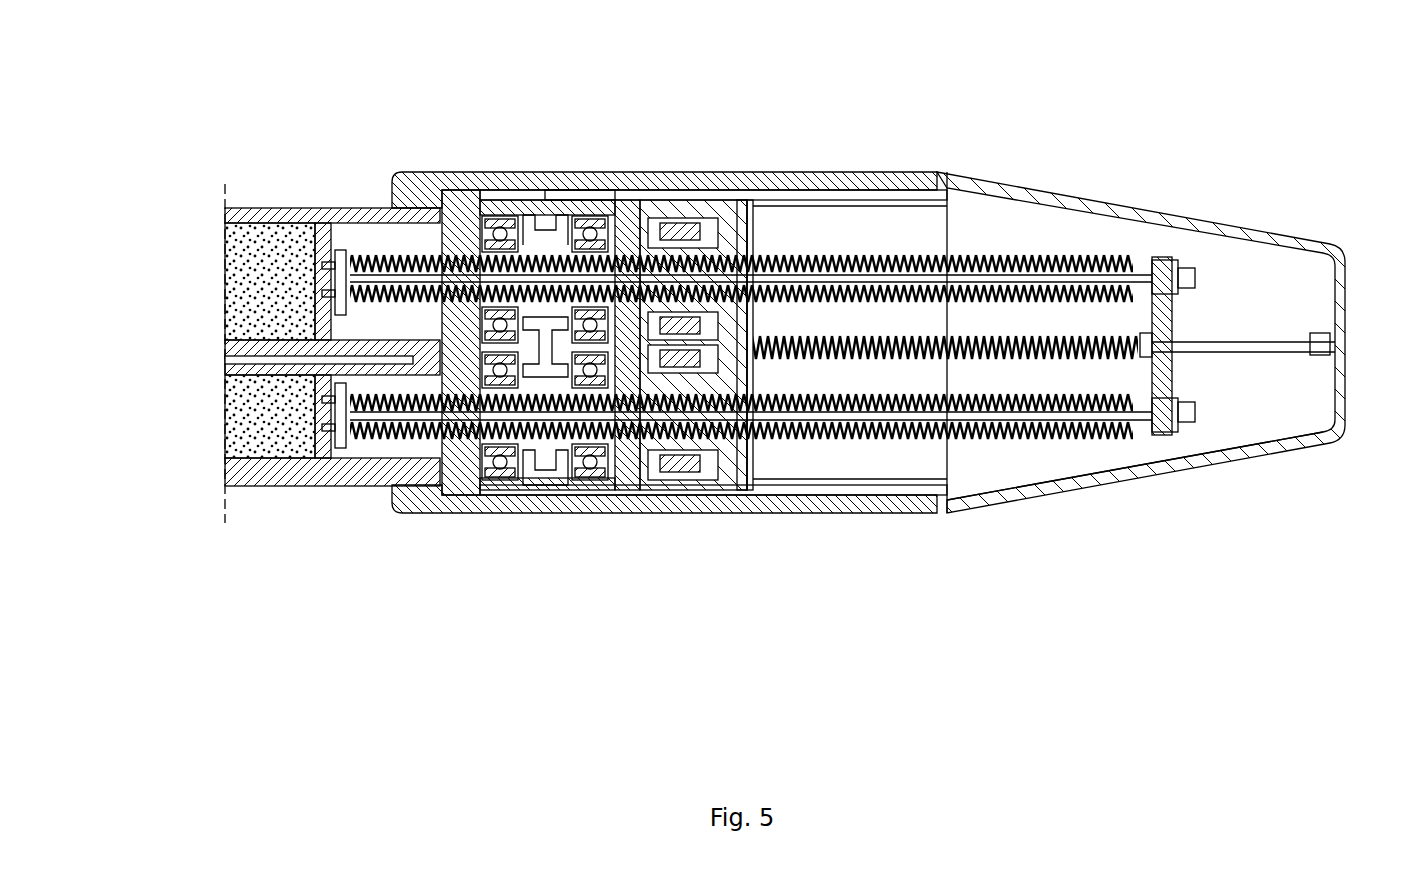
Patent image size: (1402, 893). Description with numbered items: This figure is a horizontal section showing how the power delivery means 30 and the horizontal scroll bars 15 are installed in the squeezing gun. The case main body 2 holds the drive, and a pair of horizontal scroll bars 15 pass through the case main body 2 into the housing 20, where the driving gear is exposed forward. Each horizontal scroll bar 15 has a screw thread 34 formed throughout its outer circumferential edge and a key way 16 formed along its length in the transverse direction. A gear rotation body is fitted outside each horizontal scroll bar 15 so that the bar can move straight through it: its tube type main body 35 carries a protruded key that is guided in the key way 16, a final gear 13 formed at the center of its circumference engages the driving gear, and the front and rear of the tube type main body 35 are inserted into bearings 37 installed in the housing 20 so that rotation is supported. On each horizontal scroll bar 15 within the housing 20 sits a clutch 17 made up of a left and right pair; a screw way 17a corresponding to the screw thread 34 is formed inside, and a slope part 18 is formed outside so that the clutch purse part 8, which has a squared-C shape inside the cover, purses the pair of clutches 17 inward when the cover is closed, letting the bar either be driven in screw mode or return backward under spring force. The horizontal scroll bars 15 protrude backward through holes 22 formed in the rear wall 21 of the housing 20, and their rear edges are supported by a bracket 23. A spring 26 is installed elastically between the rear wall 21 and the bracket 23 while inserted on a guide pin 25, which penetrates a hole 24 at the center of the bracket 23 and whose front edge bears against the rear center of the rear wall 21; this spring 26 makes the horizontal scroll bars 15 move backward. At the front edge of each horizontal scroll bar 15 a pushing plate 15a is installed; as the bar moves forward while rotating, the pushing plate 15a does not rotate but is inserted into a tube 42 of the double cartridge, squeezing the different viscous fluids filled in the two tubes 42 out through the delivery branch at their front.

The case main body 2 is at (1220, 225).
The clutch purse part 8 is at (690, 225).
The final gear 13 is at (540, 212).
The horizontal scroll bar 15 is at (968, 250).
The pushing plate 15a is at (315, 444).
The key way 16 is at (1073, 386).
The clutch 17 is at (650, 230).
The screw way 17a is at (700, 410).
The slope part 18 is at (660, 480).
The housing 20 is at (710, 490).
The rear wall 21 is at (762, 262).
The hole 22 is at (846, 265).
The bracket 23 is at (1165, 380).
The hole 24 is at (1210, 343).
The guide pin 25 is at (1280, 350).
The spring 26 is at (1060, 270).
The power delivery means 30 is at (466, 232).
The screw thread 34 is at (997, 437).
The tube type main body 35 is at (633, 480).
The bearing 37 is at (592, 212).
The tube 42 is at (258, 207).